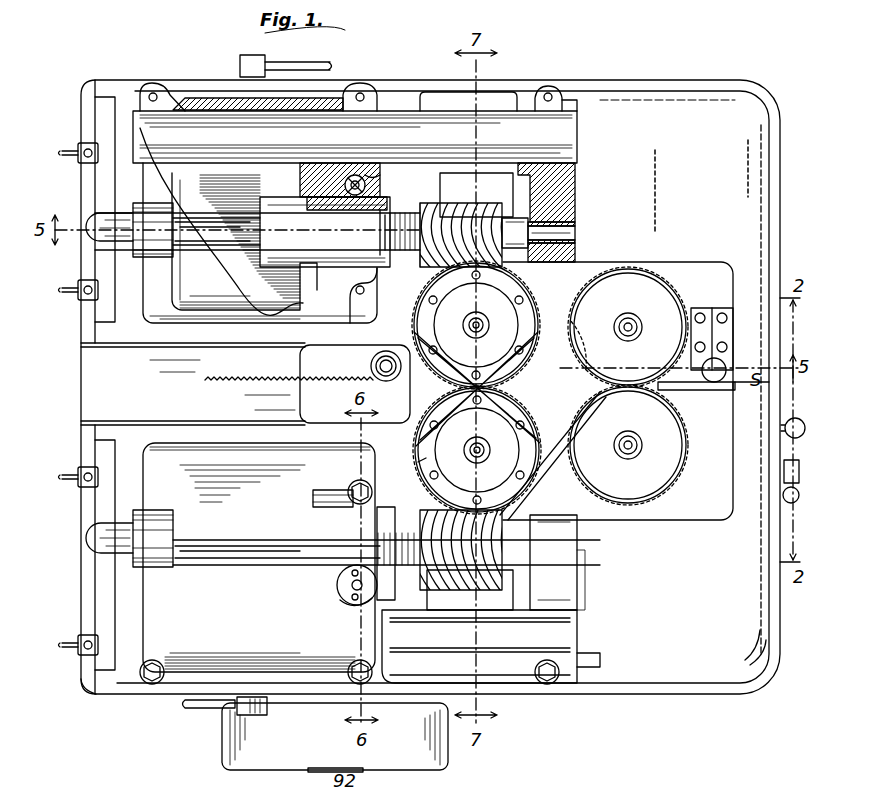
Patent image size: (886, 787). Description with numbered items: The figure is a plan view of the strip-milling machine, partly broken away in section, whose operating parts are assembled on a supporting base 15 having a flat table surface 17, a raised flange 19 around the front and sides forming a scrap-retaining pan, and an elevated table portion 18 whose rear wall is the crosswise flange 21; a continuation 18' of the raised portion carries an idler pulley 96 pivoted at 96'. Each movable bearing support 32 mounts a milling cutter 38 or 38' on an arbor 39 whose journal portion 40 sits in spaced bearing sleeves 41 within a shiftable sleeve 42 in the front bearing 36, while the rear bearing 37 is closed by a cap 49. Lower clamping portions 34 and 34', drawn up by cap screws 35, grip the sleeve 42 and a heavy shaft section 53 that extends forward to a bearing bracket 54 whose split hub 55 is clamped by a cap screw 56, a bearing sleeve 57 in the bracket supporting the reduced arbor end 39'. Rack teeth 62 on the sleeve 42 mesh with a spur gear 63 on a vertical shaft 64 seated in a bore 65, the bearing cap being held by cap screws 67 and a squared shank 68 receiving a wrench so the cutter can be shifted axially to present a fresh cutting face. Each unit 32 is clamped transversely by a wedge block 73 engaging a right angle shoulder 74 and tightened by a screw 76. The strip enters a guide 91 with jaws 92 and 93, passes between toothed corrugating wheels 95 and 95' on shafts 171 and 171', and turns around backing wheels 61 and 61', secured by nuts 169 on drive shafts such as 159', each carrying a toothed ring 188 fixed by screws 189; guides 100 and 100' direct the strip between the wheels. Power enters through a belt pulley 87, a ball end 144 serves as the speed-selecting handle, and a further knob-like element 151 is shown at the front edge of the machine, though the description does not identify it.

The supporting base 15 is at (105, 695).
The flat table surface 17 is at (725, 690).
The elevated table portion 18 is at (619, 408).
The continuation of the raised table portion 18' is at (203, 384).
The raised flange 19 is at (745, 690).
The flange 21 is at (421, 100).
The movable bearing support 32 is at (180, 278).
The lower clamping portion 34 is at (373, 300).
The lower clamping portion 34' is at (272, 73).
The cap screw 35 is at (153, 94).
The front bearing 36 is at (305, 270).
The rear bearing 37 is at (140, 245).
The milling cutter 38 is at (364, 542).
The milling cutter 38' is at (454, 239).
The arbor 39 is at (449, 384).
The reduced end of the arbor 39' is at (572, 235).
The journal portion 40 is at (360, 228).
The bearing sleeve 41 is at (380, 225).
The shiftable sleeve 42 is at (315, 205).
The cap 49 is at (95, 220).
The shaft section 53 is at (390, 120).
The front bearing bracket 54 is at (577, 190).
The split hub 55 is at (577, 100).
The cap screw 56 is at (550, 94).
The bearing sleeve 57 is at (578, 226).
The backing wheel 61 is at (482, 450).
The backing wheel 61' is at (489, 325).
The rack teeth 62 is at (320, 185).
The spur gear 63 is at (355, 175).
The vertical operating shaft 64 is at (370, 175).
The bore 65 is at (350, 575).
The cap screw 67 is at (351, 590).
The squared shank 68 is at (357, 605).
The wedge block 73 is at (100, 165).
The right angle shoulder 74 is at (95, 85).
The manually operable screw 76 is at (74, 153).
The belt pulley 87 is at (225, 740).
The guide 91 is at (726, 365).
The guide jaw 92 is at (705, 390).
The guide jaw 93 is at (736, 392).
The corrugating wheel 95 is at (642, 445).
The corrugating wheel 95' is at (639, 327).
The idler pulley 96 is at (355, 384).
The pivot 96' is at (366, 360).
The guide 100 is at (553, 420).
The guide 100' is at (472, 389).
The ball end 144 is at (785, 430).
The knob 151 is at (787, 500).
The vertical drive shaft 159' is at (500, 385).
The nut 169 is at (480, 318).
The shaft 171 is at (627, 454).
The shaft 171' is at (622, 336).
The toothed ring 188 is at (515, 388).
The screw 189 is at (420, 462).